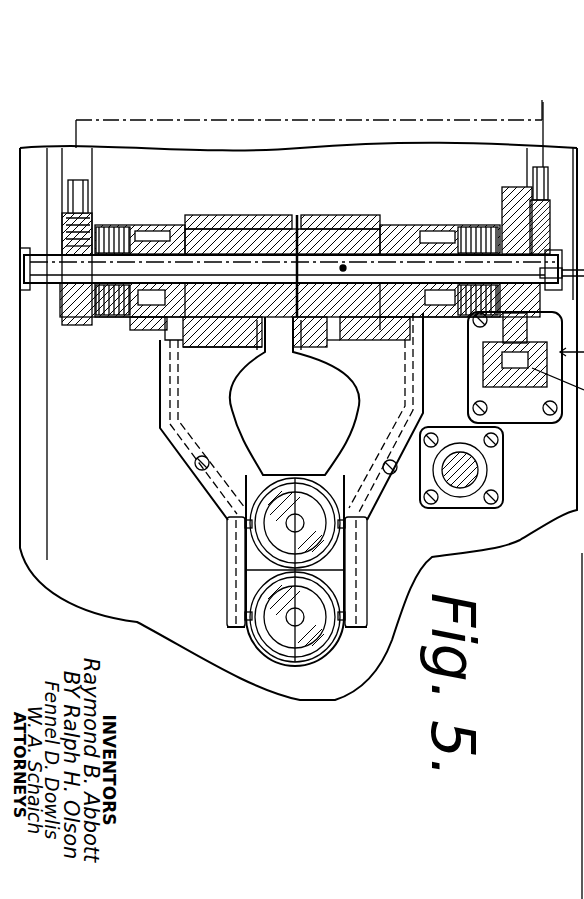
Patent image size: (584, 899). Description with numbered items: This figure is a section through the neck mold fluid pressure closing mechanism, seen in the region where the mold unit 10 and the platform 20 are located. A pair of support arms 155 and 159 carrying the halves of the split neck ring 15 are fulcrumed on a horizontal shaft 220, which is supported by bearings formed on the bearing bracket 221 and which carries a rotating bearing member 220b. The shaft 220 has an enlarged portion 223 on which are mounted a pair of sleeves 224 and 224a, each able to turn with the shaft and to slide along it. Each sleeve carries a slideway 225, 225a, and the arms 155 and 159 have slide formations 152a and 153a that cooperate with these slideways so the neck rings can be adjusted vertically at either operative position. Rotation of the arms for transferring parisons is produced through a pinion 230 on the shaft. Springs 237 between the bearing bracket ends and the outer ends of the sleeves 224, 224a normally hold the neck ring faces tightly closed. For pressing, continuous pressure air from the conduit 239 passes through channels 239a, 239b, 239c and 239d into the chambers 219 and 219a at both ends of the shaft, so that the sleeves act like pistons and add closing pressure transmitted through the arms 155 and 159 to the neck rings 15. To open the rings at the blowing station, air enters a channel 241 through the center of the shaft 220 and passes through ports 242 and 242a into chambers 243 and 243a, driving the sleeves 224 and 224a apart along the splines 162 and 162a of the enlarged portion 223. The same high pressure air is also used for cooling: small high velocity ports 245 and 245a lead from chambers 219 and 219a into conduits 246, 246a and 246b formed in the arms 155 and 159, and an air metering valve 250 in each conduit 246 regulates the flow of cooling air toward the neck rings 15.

The mold unit 10 is at (302, 499).
The split neck ring 15 is at (276, 632).
The platform 20 is at (489, 467).
The slide formation 152a is at (493, 367).
The slide formation 153a is at (163, 342).
The support arm 155 is at (384, 364).
The support arm 159 is at (266, 522).
The spline 162 is at (357, 343).
The spline 162a is at (280, 318).
The chamber 219 is at (430, 307).
The chamber 219a is at (115, 302).
The shaft 220 is at (66, 274).
The bearing member 220b is at (100, 318).
The bearing bracket 221 is at (62, 182).
The enlarged portion 223 is at (252, 230).
The sleeve 224 is at (370, 225).
The sleeve 224a is at (226, 222).
The slideway 225 is at (322, 350).
The slideway 225a is at (262, 330).
The pinion 230 is at (513, 190).
The spring 237 is at (470, 238).
The conduit 239 is at (556, 147).
The channel 239a is at (62, 218).
The channel 239b is at (297, 216).
The channel 239c is at (70, 178).
The channel 239d is at (62, 242).
The channel 241 is at (343, 266).
The port 242 is at (396, 340).
The port 242a is at (200, 343).
The chamber 243 is at (408, 218).
The chamber 243a is at (188, 216).
The high velocity port 245 is at (428, 312).
The high velocity port 245a is at (150, 335).
The conduit 246 is at (182, 456).
The conduit 246a is at (228, 524).
The conduit 246b is at (350, 618).
The air metering valve 250 is at (200, 470).